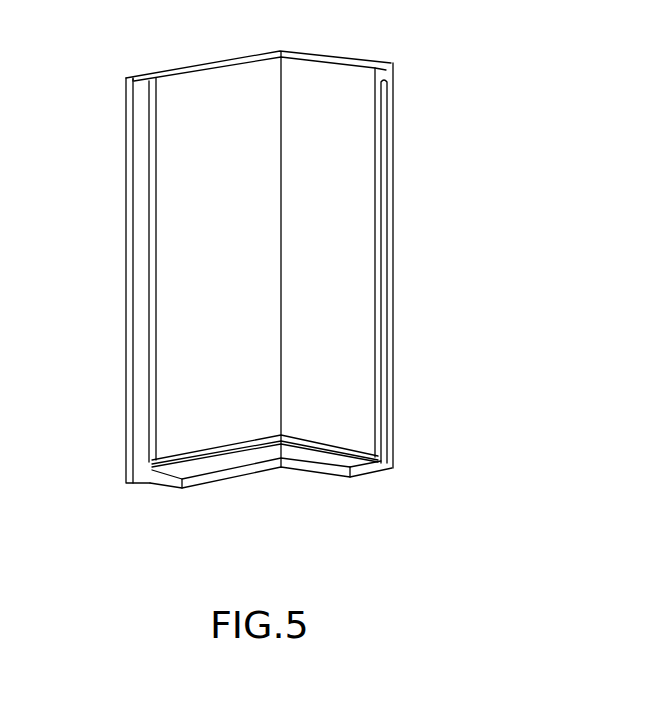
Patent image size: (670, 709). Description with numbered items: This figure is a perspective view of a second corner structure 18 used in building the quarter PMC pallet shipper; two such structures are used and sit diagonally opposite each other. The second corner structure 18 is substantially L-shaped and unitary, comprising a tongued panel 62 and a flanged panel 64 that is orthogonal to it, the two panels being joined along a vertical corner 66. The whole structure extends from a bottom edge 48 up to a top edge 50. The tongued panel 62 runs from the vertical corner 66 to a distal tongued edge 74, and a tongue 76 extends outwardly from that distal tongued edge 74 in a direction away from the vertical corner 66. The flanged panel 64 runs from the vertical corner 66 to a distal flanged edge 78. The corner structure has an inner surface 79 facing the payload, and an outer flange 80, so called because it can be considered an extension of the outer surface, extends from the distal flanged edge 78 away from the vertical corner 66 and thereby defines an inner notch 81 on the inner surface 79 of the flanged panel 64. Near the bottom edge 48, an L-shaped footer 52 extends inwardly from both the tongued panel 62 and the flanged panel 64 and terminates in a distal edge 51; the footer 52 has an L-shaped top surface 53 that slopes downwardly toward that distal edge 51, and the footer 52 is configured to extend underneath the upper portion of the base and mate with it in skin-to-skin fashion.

The second corner structure 18 is at (484, 102).
The bottom edge 48 is at (357, 481).
The top edge 50 is at (353, 57).
The distal edge 51 is at (316, 468).
The footer 52 is at (319, 458).
The top surface 53 is at (347, 462).
The tongued panel 62 is at (328, 261).
The flanged panel 64 is at (219, 266).
The vertical corner 66 is at (283, 178).
The distal tongued edge 74 is at (378, 75).
The tongue 76 is at (390, 231).
The distal flanged edge 78 is at (150, 218).
The inner surface 79 is at (353, 336).
The outer flange 80 is at (127, 137).
The inner notch 81 is at (136, 369).